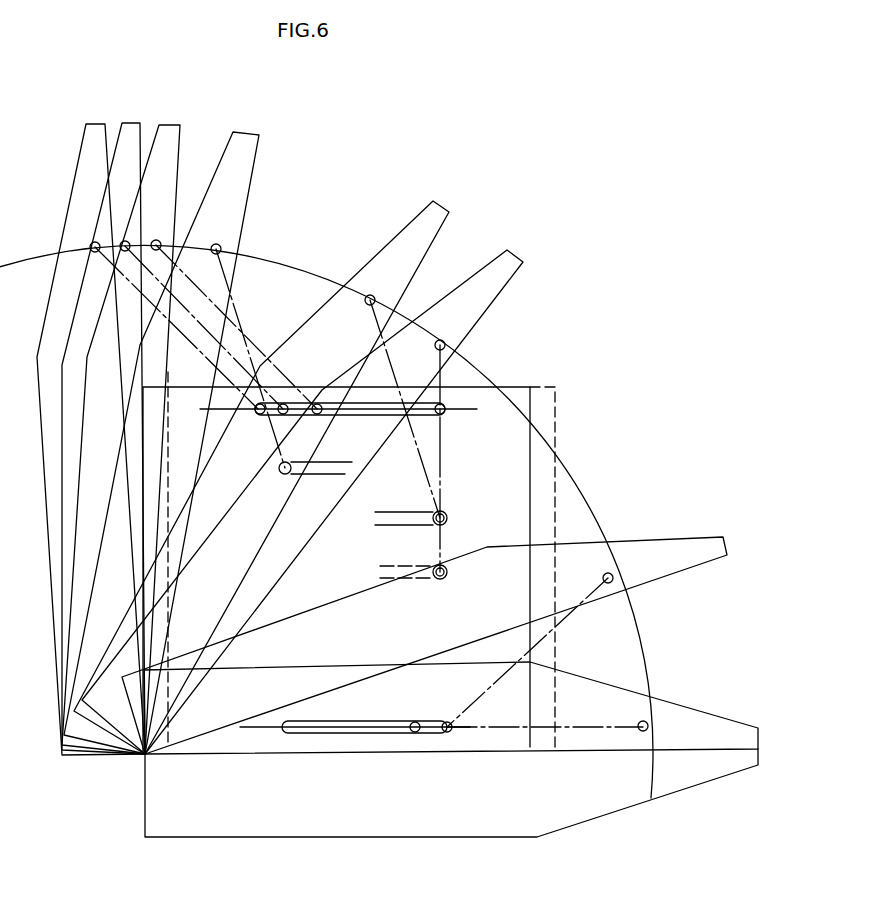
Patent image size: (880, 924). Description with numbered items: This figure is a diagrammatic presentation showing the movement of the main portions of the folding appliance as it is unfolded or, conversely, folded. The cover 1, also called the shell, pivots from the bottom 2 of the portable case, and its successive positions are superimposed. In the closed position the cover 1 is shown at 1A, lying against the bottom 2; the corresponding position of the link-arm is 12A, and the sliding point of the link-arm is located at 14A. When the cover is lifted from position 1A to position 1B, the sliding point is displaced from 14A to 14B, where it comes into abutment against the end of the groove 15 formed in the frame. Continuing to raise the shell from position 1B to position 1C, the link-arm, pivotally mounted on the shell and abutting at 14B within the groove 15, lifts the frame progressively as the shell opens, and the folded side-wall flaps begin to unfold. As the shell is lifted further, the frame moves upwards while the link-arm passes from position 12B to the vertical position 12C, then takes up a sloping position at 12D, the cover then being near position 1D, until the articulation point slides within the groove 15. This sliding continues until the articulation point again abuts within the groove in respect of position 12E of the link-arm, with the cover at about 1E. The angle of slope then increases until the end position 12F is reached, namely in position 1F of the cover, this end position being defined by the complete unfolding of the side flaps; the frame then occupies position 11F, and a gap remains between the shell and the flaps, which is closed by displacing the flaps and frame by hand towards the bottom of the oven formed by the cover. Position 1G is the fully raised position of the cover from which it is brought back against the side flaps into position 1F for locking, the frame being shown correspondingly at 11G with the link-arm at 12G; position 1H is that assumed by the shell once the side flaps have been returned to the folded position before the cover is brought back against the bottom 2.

The cover 1 is at (80, 295).
The closed position of the cover 1A is at (707, 726).
The position of the cover 1B is at (680, 547).
The position of the cover 1C is at (507, 275).
The position of the cover 1D is at (430, 222).
The position of the cover 1E is at (245, 157).
The end position of the cover 1F is at (130, 137).
The position of the cover 1G is at (93, 137).
The position of the shell 1H is at (170, 143).
The bottom 2 is at (617, 800).
The position of the frame 11F is at (553, 393).
The position of the frame 11G is at (142, 443).
The position of the link-arm 12A is at (558, 727).
The position of the link-arm 12B is at (558, 622).
The vertical position of the link-arm 12C is at (453, 458).
The sloping position of the link-arm 12D is at (417, 447).
The position of the link-arm 12E is at (233, 295).
The end position of the link-arm 12F is at (200, 327).
The position of the link-arm 12G is at (212, 366).
The sliding point position 14A is at (415, 733).
The sliding point position 14B is at (447, 733).
The groove 15 is at (320, 727).